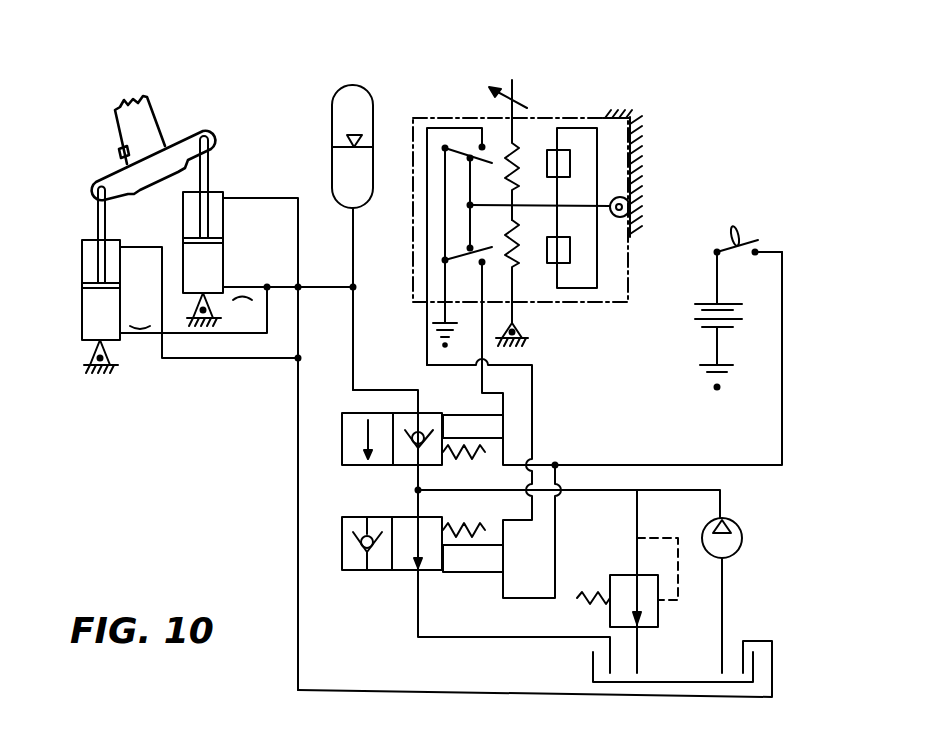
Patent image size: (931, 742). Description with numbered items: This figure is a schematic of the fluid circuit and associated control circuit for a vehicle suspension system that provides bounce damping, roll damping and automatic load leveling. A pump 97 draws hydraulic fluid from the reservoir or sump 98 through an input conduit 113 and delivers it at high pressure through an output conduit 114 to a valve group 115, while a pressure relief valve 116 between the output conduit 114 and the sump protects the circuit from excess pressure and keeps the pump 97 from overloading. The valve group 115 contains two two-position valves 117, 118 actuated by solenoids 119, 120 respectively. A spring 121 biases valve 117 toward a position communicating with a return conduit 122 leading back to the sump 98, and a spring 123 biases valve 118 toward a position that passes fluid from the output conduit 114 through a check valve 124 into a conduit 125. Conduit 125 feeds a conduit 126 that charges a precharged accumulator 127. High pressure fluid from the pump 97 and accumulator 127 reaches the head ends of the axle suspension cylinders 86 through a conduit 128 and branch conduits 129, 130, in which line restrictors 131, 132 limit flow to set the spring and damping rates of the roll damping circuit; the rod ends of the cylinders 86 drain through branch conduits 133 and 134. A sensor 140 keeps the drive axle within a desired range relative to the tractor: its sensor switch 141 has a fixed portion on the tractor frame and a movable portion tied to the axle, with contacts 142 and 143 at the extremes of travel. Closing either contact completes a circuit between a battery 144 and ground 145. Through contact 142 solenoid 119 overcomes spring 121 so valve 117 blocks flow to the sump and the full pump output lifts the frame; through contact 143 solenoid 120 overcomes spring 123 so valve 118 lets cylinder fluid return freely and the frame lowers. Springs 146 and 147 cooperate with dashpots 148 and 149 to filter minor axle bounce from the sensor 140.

The axle suspension cylinder 86 is at (82, 250).
The pump 97 is at (742, 530).
The reservoir or sump 98 is at (660, 680).
The input conduit 113 is at (722, 594).
The output conduit 114 is at (706, 492).
The valve group 115 is at (408, 487).
The pressure relief valve 116 is at (610, 587).
The two-position valve 117 is at (340, 553).
The two-position valve 118 is at (340, 438).
The solenoid 119 is at (453, 573).
The solenoid 120 is at (487, 433).
The spring 121 is at (467, 502).
The return conduit 122 is at (541, 642).
The spring 123 is at (457, 460).
The check valve 124 is at (424, 433).
The conduit 125 is at (372, 368).
The conduit 126 is at (354, 243).
The precharged accumulator 127 is at (337, 91).
The conduit 128 is at (340, 276).
The branch conduit 129 is at (233, 335).
The branch conduit 130 is at (260, 280).
The line restrictor 131 is at (138, 340).
The line restrictor 132 is at (241, 281).
The branch conduit 133 is at (217, 360).
The branch conduit 134 is at (248, 197).
The sensor 140 is at (526, 60).
The sensor switch 141 is at (415, 214).
The contact 142 is at (482, 143).
The contact 143 is at (482, 263).
The battery 144 is at (724, 300).
The ground 145 is at (727, 375).
The spring 146 is at (533, 140).
The spring 147 is at (520, 250).
The dashpot 148 is at (572, 160).
The dashpot 149 is at (572, 250).